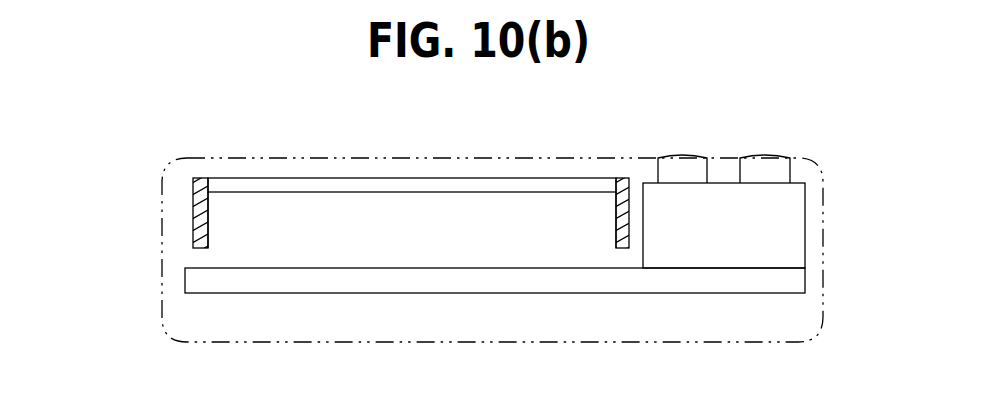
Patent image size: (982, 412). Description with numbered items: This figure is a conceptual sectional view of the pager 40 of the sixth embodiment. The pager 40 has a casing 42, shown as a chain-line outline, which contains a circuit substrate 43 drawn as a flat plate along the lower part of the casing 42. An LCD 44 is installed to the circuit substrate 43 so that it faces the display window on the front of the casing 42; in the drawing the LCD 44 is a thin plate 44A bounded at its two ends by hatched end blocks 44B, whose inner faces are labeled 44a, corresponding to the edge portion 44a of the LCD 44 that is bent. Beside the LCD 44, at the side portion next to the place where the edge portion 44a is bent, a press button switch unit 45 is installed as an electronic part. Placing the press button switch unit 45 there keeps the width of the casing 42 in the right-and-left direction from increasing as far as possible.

The pager 40 is at (487, 220).
The casing 42 is at (255, 345).
The circuit substrate 43 is at (370, 284).
The LCD 44 is at (359, 184).
The light guide plate 44A is at (476, 188).
The end blocks 44B is at (193, 200).
The edge portion 44a is at (208, 232).
The press button switch unit 45 is at (717, 243).